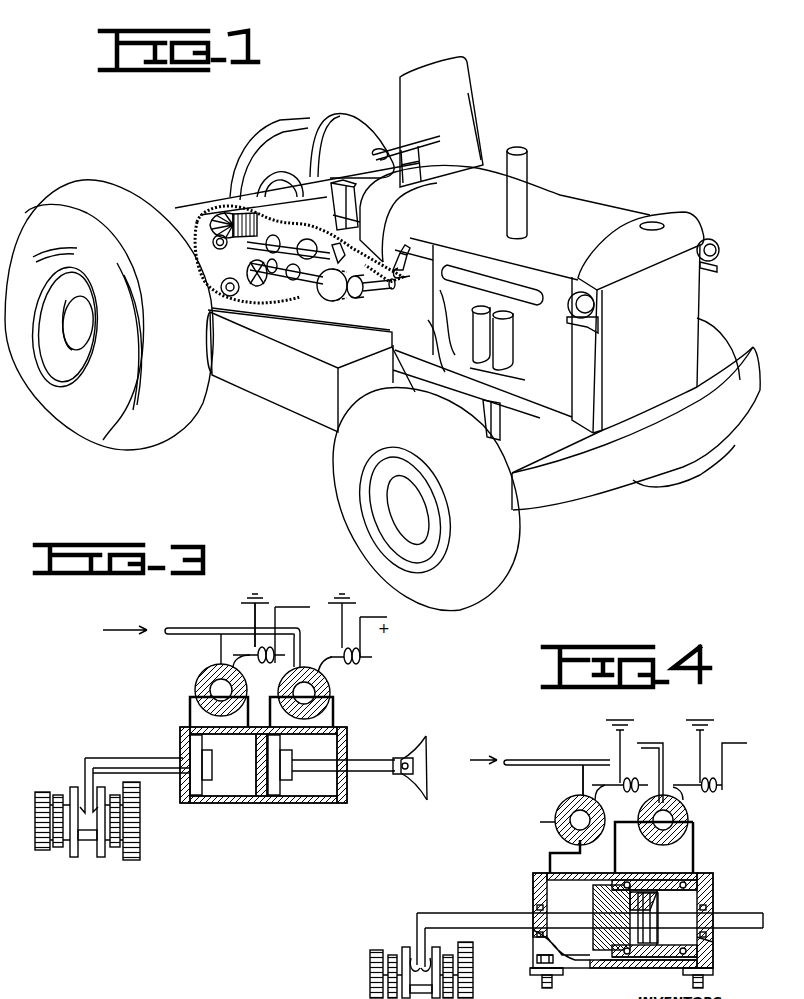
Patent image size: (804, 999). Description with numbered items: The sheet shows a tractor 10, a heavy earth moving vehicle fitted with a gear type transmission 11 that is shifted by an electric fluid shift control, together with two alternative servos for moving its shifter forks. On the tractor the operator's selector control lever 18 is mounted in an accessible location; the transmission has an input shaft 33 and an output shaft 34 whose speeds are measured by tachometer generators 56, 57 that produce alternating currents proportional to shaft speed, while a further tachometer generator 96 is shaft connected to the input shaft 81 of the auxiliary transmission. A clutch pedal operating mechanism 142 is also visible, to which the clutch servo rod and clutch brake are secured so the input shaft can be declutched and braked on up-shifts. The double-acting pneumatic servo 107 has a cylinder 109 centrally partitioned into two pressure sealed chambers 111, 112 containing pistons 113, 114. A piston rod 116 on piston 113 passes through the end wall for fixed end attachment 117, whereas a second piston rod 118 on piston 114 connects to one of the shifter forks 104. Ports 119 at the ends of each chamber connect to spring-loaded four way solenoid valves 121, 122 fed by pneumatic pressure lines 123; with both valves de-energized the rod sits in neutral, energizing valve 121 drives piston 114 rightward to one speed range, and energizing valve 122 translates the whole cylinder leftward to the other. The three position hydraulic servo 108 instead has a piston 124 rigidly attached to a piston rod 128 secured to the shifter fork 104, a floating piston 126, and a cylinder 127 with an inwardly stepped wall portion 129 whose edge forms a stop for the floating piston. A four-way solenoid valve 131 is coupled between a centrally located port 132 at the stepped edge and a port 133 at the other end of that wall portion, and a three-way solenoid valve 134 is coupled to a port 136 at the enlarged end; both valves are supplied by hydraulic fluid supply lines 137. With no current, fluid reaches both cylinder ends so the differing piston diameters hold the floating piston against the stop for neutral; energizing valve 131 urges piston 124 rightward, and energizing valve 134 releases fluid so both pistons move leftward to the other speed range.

In FIG. 1, the tractor 10 is at (569, 182).
In FIG. 1, the gear type transmission 11 is at (259, 308).
In FIG. 1, the selector control lever 18 is at (373, 157).
In FIG. 1, the input shaft 33 is at (262, 305).
In FIG. 1, the output shaft 34 is at (204, 214).
In FIG. 1, the tachometer generator 56 is at (318, 300).
In FIG. 1, the tachometer generator 57 is at (233, 214).
In FIG. 1, the auxiliary transmission input shaft 81 is at (375, 292).
In FIG. 1, the tachometer generator 96 is at (350, 300).
In FIG. 1, the clutch pedal operating mechanism 142 is at (408, 250).
In FIG. 3, the shifter fork 104 is at (88, 776).
In FIG. 4, the shifter fork 104 is at (417, 935).
In FIG. 3, the double-acting pneumatic servo 107 is at (260, 822).
In FIG. 3, the cylinder 109 is at (265, 800).
In FIG. 3, the chamber 111 is at (322, 758).
In FIG. 3, the chamber 112 is at (244, 758).
In FIG. 3, the piston 113 is at (283, 790).
In FIG. 3, the piston 114 is at (199, 787).
In FIG. 3, the piston rod 116 is at (360, 762).
In FIG. 3, the fixed end attachment 117 is at (419, 753).
In FIG. 3, the second piston rod 118 is at (153, 765).
In FIG. 3, the ports 119 is at (187, 723).
In FIG. 3, the four way solenoid valve 121 is at (207, 690).
In FIG. 3, the four way solenoid valve 122 is at (330, 681).
In FIG. 3, the pneumatic pressure lines 123 is at (228, 617).
In FIG. 4, the three position hydraulic servo 108 is at (519, 872).
In FIG. 4, the piston 124 is at (700, 942).
In FIG. 4, the floating piston 126 is at (595, 968).
In FIG. 4, the cylinder 127 is at (632, 968).
In FIG. 4, the piston rod 128 is at (485, 910).
In FIG. 4, the inwardly stepped wall portion 129 is at (700, 890).
In FIG. 4, the four-way solenoid valve 131 is at (688, 812).
In FIG. 4, the centrally located port 132 is at (617, 868).
In FIG. 4, the port 133 is at (696, 868).
In FIG. 4, the three-way solenoid valve 134 is at (568, 812).
In FIG. 4, the port 136 is at (550, 870).
In FIG. 4, the hydraulic fluid supply lines 137 is at (572, 767).